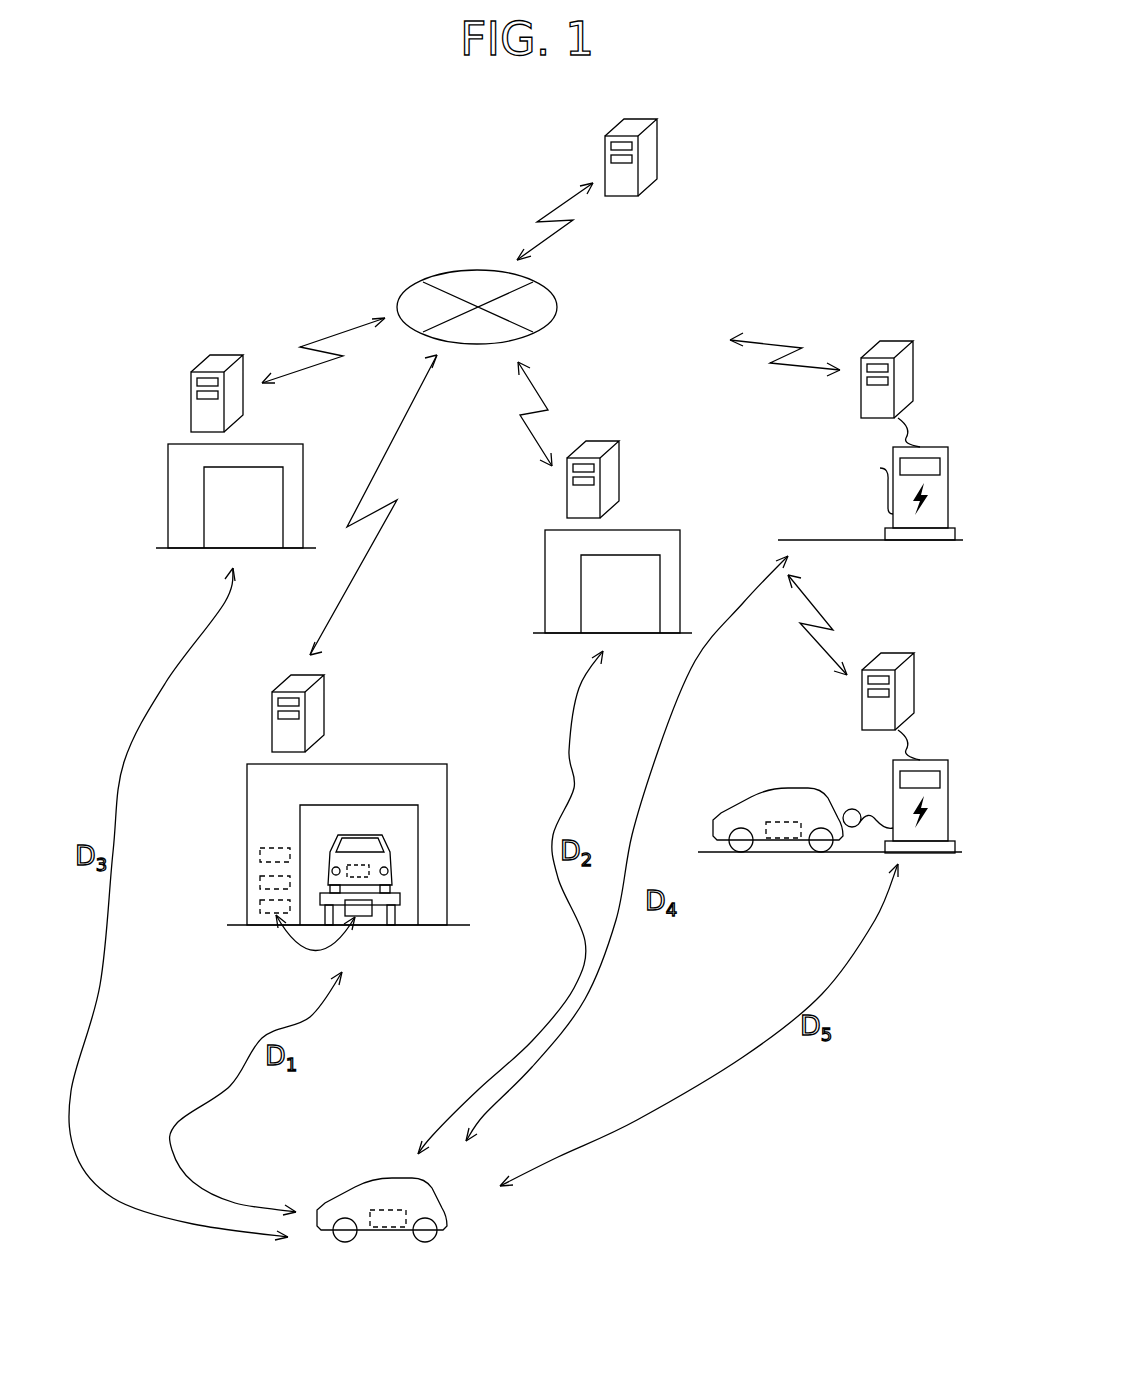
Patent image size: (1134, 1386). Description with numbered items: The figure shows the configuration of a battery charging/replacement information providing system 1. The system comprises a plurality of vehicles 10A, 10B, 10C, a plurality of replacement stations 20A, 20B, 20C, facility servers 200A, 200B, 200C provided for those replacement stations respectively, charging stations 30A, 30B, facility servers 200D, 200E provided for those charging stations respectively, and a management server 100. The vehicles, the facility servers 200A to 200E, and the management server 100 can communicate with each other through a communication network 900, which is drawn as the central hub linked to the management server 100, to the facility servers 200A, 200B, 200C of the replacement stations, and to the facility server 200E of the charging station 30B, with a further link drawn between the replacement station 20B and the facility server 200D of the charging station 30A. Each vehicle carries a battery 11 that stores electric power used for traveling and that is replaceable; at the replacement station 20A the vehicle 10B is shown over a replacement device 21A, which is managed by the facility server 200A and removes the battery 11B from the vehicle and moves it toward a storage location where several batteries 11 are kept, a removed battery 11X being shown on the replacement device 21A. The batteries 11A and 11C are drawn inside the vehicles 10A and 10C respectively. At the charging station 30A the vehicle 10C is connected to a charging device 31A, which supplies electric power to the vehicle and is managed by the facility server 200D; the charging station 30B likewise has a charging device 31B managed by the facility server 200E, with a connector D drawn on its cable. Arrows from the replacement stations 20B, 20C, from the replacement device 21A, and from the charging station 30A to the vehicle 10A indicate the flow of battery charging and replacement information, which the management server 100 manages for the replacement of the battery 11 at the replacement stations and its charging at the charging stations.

The battery charging/replacement information providing system 1 is at (135, 130).
The management server 100 is at (640, 150).
The communication network 900 is at (557, 307).
The facility server 200A is at (324, 700).
The facility server 200B is at (620, 470).
The facility server 200C is at (190, 393).
The facility server 200D is at (893, 655).
The facility server 200E is at (893, 340).
The replacement station 20A is at (400, 764).
The replacement station 20B is at (680, 550).
The replacement station 20C is at (168, 468).
The charging station 30A is at (840, 745).
The charging station 30B is at (853, 452).
The charging device 31A is at (937, 760).
The charging device 31B is at (935, 447).
The connector D is at (877, 485).
The vehicle 10A is at (420, 1185).
The vehicle 10B is at (357, 835).
The vehicle 10C is at (800, 793).
The battery 11 is at (258, 906).
The battery 11A is at (388, 1232).
The battery 11B is at (370, 865).
The battery 11C is at (783, 840).
The battery 11X is at (362, 916).
The battery exchange device 21A is at (400, 900).